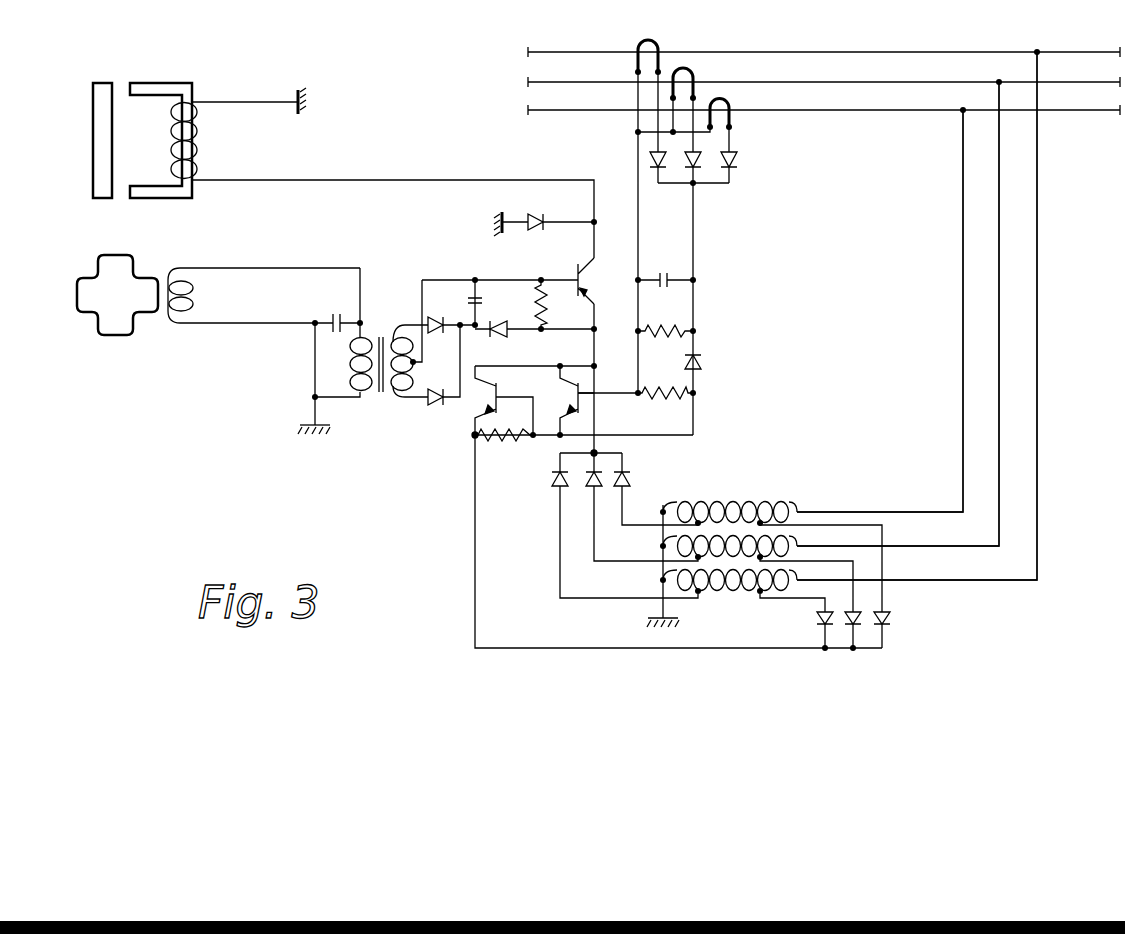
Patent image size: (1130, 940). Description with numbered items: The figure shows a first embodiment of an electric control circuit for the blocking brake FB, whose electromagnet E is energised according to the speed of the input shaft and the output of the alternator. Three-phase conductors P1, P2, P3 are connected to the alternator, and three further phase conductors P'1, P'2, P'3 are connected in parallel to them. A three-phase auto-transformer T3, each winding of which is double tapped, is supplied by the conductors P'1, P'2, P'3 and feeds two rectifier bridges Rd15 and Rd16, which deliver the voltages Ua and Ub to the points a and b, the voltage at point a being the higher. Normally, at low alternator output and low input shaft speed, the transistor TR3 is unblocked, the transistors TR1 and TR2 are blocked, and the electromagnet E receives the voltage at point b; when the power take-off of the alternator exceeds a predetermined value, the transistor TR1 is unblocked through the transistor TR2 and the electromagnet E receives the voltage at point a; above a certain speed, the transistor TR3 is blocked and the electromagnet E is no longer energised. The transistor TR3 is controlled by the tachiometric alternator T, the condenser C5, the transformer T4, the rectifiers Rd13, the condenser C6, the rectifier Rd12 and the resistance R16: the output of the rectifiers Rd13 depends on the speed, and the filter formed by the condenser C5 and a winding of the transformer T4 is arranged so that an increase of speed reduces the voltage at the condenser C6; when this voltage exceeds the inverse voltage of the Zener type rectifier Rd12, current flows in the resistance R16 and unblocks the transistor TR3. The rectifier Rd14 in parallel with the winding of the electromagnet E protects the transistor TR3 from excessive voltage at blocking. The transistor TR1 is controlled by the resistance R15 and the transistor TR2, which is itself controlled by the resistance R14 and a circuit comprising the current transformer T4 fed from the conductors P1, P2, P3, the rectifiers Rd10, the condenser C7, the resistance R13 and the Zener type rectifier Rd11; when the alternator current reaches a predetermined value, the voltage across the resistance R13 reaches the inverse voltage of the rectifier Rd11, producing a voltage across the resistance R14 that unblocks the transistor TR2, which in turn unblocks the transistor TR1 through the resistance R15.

The blocking brake FB is at (100, 80).
The electromagnet E is at (200, 137).
The tachiometric alternator T is at (85, 292).
The condenser C5 is at (336, 320).
The transformer T4 is at (380, 334).
The rectifiers Rd13 is at (440, 356).
The condenser C6 is at (466, 301).
The rectifier Rd12 is at (498, 322).
The resistance R16 is at (559, 304).
The transistor TR3 is at (605, 281).
The rectifier Rd14 is at (542, 218).
The transistor TR1 is at (507, 406).
The transistor TR2 is at (582, 385).
The resistance R15 is at (500, 446).
The point a is at (473, 438).
The point b is at (597, 453).
The condenser C7 is at (661, 283).
The resistance R13 is at (665, 321).
The resistance R14 is at (665, 385).
The rectifier Rd11 is at (700, 362).
The rectifiers Rd10 is at (734, 172).
The three-phase conductor P1 is at (858, 53).
The three-phase conductor P2 is at (858, 83).
The three-phase conductor P3 is at (858, 111).
The rectifier bridge Rd16 is at (552, 487).
The three-phase auto-transformer T3 is at (743, 501).
The phase conductor P'3 is at (880, 311).
The phase conductor P'2 is at (898, 314).
The phase conductor P'1 is at (917, 317).
The rectifier bridge Rd15 is at (893, 629).